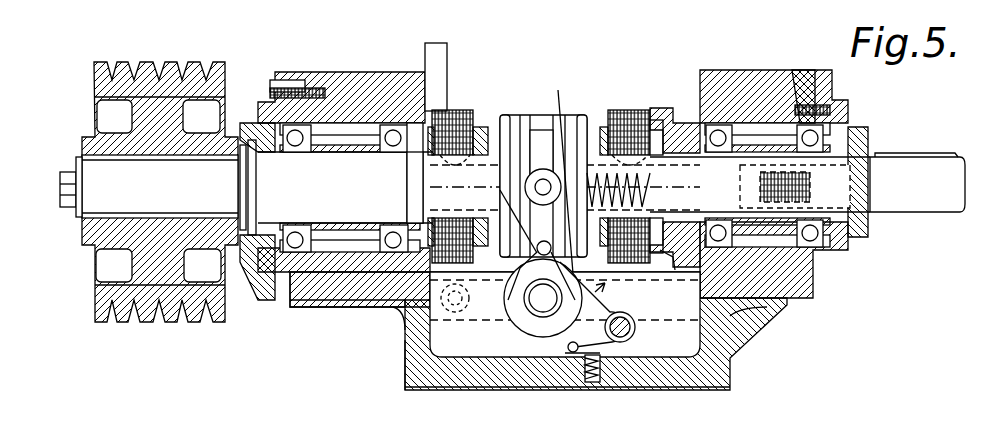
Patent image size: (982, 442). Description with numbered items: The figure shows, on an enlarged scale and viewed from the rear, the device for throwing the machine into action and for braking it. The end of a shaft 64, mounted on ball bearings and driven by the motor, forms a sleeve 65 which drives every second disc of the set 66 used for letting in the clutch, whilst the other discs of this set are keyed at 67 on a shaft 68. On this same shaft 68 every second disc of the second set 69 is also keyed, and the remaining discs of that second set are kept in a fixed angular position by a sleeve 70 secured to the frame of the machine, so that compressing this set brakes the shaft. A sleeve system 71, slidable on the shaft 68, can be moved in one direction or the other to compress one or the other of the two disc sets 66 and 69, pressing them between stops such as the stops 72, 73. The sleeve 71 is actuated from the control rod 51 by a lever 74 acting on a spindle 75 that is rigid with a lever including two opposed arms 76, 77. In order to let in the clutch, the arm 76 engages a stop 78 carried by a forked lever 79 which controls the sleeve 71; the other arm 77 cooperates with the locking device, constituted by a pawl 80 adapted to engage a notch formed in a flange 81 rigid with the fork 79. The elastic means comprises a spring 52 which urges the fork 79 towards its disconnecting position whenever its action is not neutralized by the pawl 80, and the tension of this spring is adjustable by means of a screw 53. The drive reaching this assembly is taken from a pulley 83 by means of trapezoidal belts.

The control rod 51 is at (447, 55).
The spring 52 is at (768, 308).
The screw 53 is at (780, 183).
The shaft 64 is at (918, 177).
The sleeve 65 is at (660, 113).
The disc set 66 is at (636, 127).
The keying 67 is at (673, 258).
The shaft 68 is at (130, 192).
The second disc set 69 is at (463, 113).
The sleeve 70 is at (430, 107).
The sleeve system 71 is at (512, 130).
The stop 72 is at (676, 120).
The stop 73 is at (602, 150).
The lever 74 is at (398, 363).
The spindle 75 is at (543, 302).
The arm 76 is at (549, 256).
The arm 77 is at (590, 342).
The stop 78 is at (537, 247).
The forked lever 79 is at (533, 212).
The pawl 80 is at (605, 357).
The flange 81 is at (522, 312).
The pulley 83 is at (165, 70).